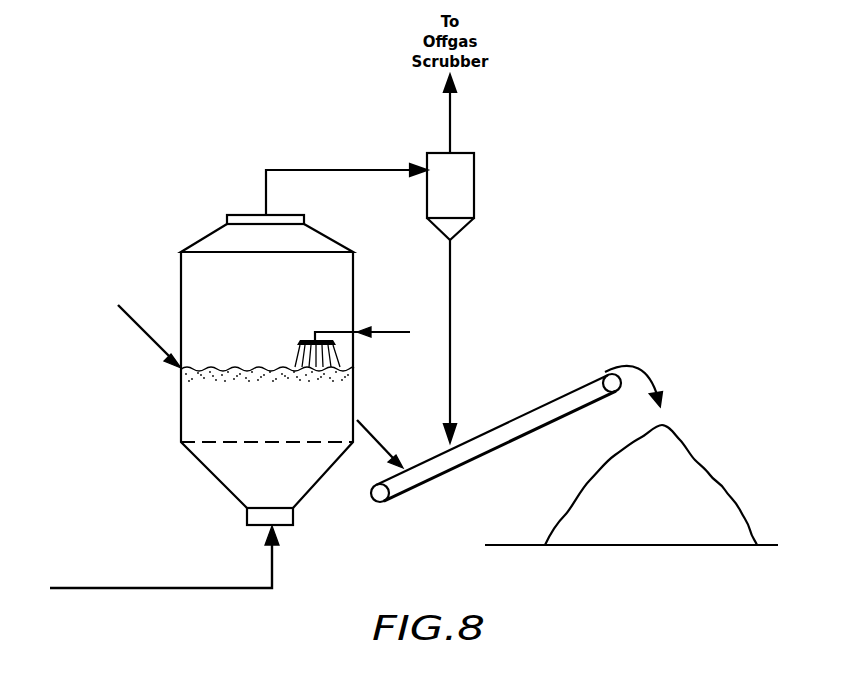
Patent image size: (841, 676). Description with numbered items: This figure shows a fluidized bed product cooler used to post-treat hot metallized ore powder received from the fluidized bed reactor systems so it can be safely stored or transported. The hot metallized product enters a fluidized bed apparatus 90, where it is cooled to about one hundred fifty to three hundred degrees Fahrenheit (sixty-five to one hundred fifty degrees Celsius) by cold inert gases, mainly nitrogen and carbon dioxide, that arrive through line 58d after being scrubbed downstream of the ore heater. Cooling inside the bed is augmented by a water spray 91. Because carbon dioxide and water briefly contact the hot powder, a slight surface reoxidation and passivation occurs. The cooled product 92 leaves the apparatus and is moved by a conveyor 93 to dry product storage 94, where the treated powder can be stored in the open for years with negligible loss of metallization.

The fluidized bed apparatus 90 is at (162, 381).
The water spray 91 is at (323, 328).
The product 92 is at (450, 363).
The conveyor 93 is at (523, 413).
The dry product storage 94 is at (685, 470).
The line 58d is at (223, 590).